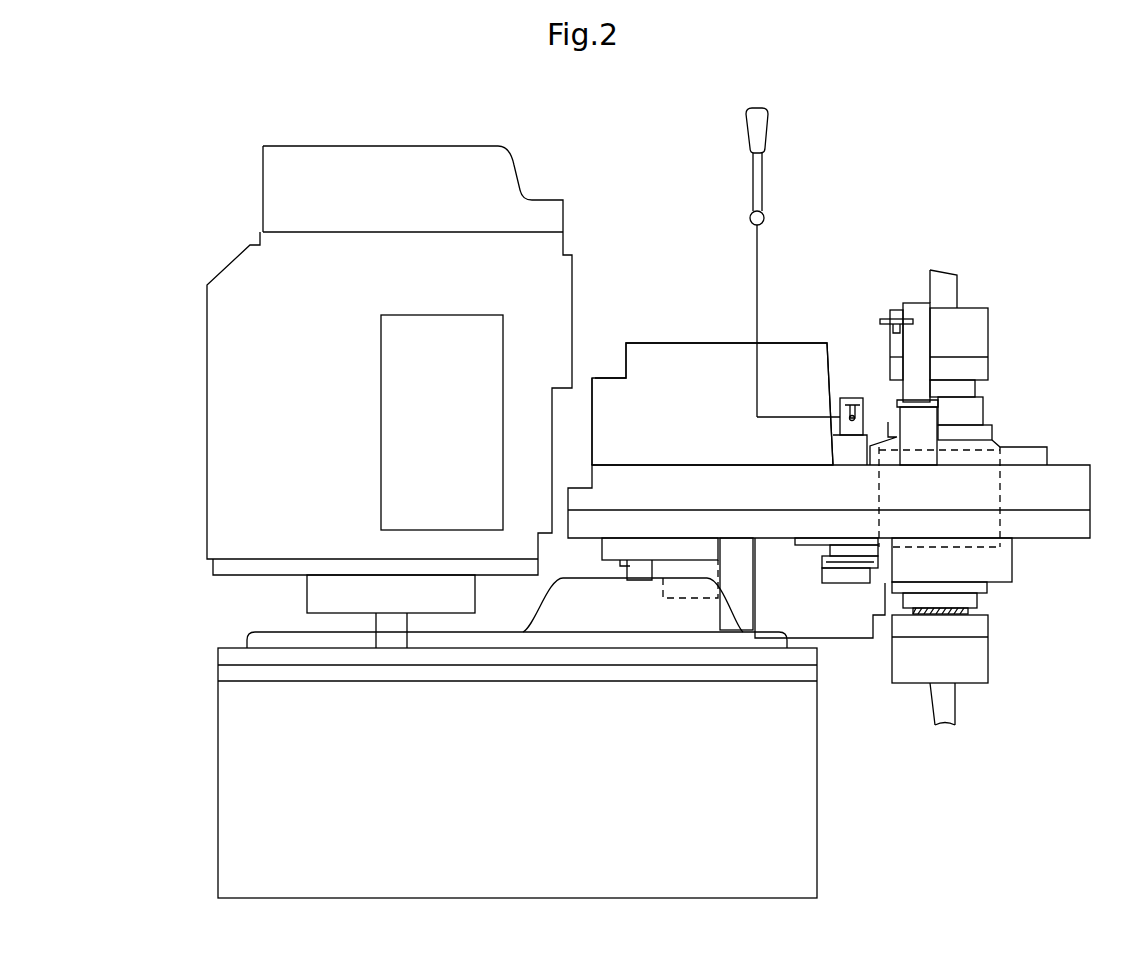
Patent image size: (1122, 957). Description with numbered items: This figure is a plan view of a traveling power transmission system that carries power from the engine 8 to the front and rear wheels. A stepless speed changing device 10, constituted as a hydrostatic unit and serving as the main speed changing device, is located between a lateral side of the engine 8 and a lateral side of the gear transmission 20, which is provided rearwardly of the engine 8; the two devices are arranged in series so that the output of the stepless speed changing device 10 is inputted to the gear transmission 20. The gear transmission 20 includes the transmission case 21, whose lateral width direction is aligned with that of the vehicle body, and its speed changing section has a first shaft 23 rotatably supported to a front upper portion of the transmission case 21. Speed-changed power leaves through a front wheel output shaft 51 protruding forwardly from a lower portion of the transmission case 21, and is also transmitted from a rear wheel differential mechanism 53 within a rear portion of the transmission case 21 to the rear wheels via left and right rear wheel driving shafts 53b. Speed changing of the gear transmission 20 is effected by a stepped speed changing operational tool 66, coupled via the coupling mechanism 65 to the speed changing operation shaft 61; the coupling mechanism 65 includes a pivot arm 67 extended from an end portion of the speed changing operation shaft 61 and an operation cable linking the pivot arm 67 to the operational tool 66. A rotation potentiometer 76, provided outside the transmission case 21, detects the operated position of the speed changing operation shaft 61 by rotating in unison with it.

The engine 8 is at (215, 335).
The stepless speed changing device 10 is at (835, 838).
The gear transmission 20 is at (620, 327).
The transmission case 21 is at (700, 357).
The first shaft 23 is at (637, 572).
The front wheel output shaft 51 is at (688, 590).
The rear wheel differential mechanism 53 is at (1002, 497).
The rear wheel driving shaft 53b is at (947, 287).
The speed changing operation shaft 61 is at (860, 400).
The coupling mechanism 65 is at (755, 253).
The stepped speed changing operational tool 66 is at (762, 128).
The pivot arm 67 is at (838, 405).
The rotation potentiometer 76 is at (852, 578).